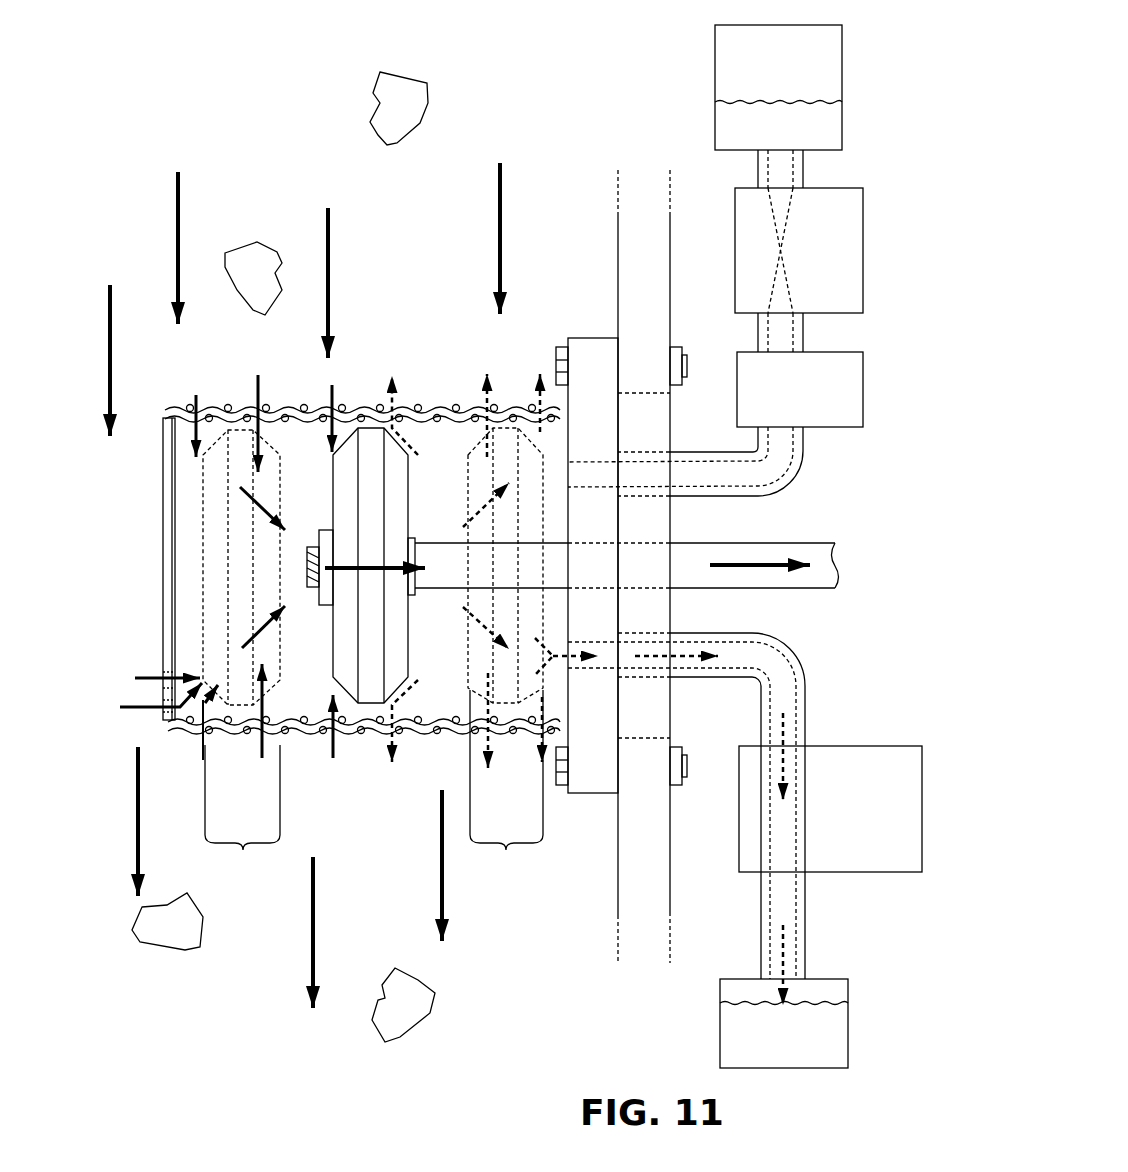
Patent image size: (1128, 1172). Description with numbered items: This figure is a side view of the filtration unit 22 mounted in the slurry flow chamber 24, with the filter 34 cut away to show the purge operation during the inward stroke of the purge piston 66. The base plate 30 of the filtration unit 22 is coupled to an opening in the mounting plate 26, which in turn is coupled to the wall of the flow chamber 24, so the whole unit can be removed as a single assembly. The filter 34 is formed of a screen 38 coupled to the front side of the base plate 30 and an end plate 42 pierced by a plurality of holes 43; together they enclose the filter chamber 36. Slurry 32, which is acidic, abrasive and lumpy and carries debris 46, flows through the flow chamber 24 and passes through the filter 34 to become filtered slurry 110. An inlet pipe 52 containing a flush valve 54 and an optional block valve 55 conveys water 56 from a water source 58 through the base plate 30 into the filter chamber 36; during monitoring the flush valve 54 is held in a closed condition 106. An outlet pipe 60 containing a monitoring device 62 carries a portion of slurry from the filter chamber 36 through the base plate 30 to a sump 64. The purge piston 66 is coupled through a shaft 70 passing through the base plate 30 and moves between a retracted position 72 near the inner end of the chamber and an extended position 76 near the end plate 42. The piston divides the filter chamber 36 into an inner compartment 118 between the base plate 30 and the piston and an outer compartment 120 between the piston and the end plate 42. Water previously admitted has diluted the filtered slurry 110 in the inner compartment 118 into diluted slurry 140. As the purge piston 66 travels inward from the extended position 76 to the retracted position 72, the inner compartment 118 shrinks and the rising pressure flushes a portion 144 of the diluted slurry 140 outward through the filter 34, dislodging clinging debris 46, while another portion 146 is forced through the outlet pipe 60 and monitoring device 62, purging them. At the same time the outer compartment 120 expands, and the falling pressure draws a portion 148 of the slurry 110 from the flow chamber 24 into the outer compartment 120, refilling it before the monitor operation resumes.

The filtration unit 22 is at (605, 1064).
The slurry flow chamber 24 is at (357, 830).
The mounting plate 26 is at (662, 315).
The base plate 30 is at (597, 445).
The slurry 32 is at (110, 375).
The filter 34 is at (340, 731).
The filter chamber 36 is at (415, 637).
The screen 38 is at (430, 404).
The end plate 42 is at (167, 550).
The holes 43 is at (163, 677).
The debris 46 is at (268, 247).
The inlet pipe 52 is at (793, 445).
The flush valve 54 is at (855, 198).
The block valve 55 is at (863, 359).
The water 56 is at (828, 110).
The water source 58 is at (835, 62).
The outlet pipe 60 is at (788, 693).
The monitoring device 62 is at (872, 751).
The sump 64 is at (845, 987).
The purge piston 66 is at (335, 670).
The shaft 70 is at (690, 553).
The retracted position 72 is at (503, 649).
The extended position 76 is at (268, 650).
The closed condition 106 is at (778, 250).
The filtered slurry 110 is at (323, 420).
The inner compartment 118 is at (423, 476).
The outer compartment 120 is at (312, 648).
The diluted slurry 140 is at (490, 394).
The portion of diluted slurry 144 is at (388, 398).
The portion of diluted slurry 146 is at (692, 657).
The portion of slurry 148 is at (256, 397).